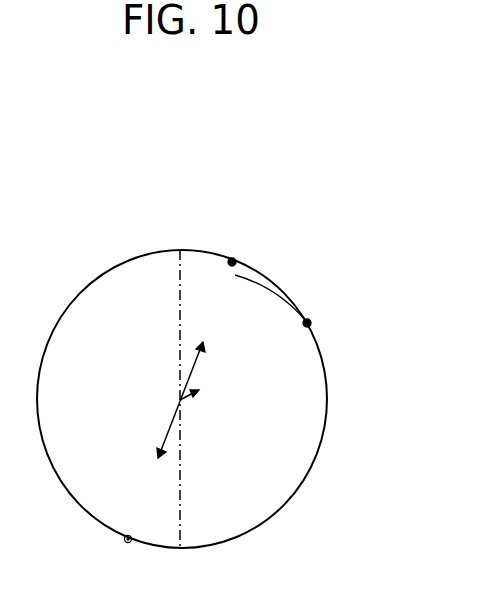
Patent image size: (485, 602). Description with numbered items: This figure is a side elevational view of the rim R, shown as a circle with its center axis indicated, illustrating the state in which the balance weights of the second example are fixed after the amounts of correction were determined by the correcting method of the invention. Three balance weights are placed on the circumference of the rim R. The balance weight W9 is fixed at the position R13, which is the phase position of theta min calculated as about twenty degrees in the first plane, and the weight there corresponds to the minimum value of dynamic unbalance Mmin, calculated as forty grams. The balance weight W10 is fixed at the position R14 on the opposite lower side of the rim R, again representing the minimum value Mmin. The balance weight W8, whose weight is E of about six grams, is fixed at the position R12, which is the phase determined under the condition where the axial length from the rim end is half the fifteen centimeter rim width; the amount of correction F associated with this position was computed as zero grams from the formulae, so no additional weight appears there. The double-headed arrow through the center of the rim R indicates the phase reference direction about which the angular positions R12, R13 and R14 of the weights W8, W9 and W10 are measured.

The balance weight W9 is at (232, 262).
The balance weight W8 is at (307, 323).
The balance weight W10 is at (128, 539).
The position R13 is at (229, 283).
The position R12 is at (295, 341).
The position R14 is at (141, 524).
The rim R is at (275, 300).
The correction amount F is at (321, 335).
The minimum value of dynamic unbalance Mmin is at (189, 406).